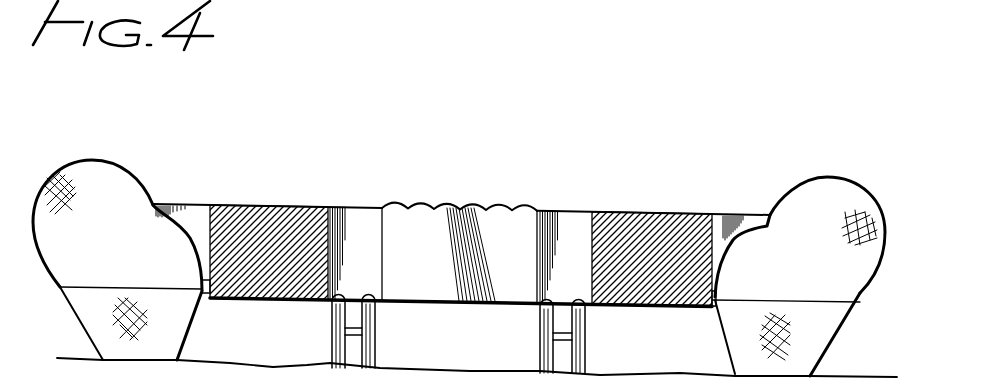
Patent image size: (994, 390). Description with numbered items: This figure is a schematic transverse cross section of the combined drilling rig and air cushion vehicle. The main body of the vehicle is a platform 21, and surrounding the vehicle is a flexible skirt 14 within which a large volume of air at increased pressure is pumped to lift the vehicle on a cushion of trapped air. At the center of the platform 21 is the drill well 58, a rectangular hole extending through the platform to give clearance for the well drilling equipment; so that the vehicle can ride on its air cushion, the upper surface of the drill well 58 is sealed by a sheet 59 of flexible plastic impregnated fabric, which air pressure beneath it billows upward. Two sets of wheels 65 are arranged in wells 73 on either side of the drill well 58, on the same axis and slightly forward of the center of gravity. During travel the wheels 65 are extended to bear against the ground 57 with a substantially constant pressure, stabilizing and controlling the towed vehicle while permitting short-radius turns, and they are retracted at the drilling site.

The flexible skirt 14 is at (92, 157).
The platform 21 is at (258, 205).
The ground 57 is at (857, 375).
The drill well 58 is at (413, 217).
The sheet 59 is at (497, 207).
The wheels 65 is at (380, 350).
The wells 73 is at (360, 227).